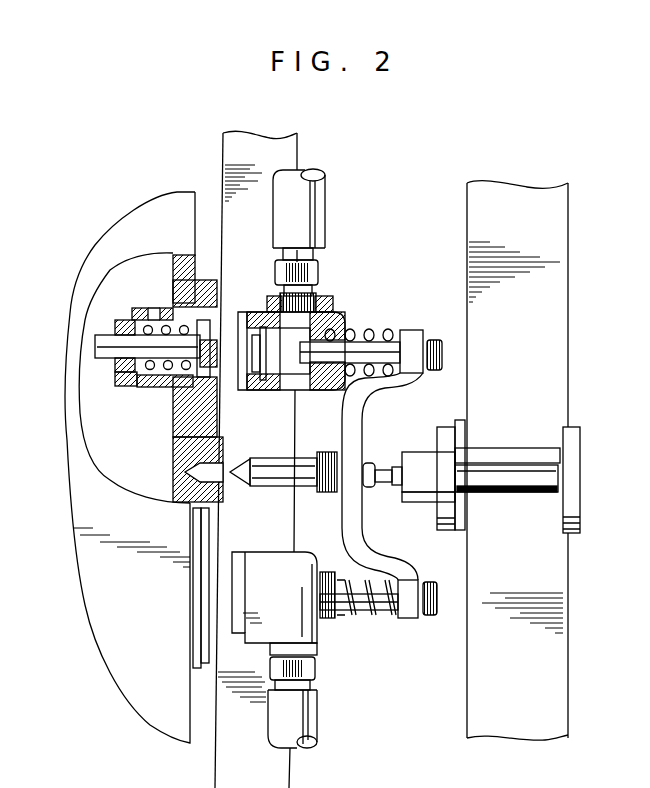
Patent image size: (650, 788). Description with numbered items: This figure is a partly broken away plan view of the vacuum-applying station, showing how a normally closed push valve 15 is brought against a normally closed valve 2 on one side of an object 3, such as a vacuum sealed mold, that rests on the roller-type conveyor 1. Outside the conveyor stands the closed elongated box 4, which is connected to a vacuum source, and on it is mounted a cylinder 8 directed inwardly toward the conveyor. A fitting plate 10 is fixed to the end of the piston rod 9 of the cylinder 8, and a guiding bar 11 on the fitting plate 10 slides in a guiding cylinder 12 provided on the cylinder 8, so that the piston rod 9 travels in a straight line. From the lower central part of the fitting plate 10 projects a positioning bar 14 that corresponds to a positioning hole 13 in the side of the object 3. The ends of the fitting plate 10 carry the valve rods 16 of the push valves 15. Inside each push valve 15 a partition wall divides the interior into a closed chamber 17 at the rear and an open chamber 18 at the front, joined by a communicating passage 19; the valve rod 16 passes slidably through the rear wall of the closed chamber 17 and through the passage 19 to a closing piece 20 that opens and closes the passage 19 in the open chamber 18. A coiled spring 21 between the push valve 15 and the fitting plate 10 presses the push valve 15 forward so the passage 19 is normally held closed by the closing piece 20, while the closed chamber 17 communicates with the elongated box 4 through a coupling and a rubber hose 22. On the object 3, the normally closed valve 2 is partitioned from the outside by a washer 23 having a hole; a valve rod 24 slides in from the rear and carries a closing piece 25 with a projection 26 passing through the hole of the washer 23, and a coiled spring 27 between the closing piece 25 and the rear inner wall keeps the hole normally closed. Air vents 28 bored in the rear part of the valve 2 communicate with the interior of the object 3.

The roller-type conveyor 1 is at (288, 143).
The normally closed valve 2 is at (142, 313).
The object 3 is at (160, 716).
The elongated box 4 is at (570, 290).
The cylinder 8 is at (576, 460).
The piston rod 9 is at (372, 470).
The fitting plate 10 is at (363, 550).
The guiding bar 11 is at (535, 467).
The guiding cylinder 12 is at (417, 493).
The positioning hole 13 is at (213, 477).
The positioning bar 14 is at (260, 482).
The normally closed push valve 15 is at (322, 305).
The valve rod 16 is at (363, 330).
The closed chamber 17 is at (303, 380).
The open chamber 18 is at (253, 373).
The communicating passage 19 is at (265, 312).
The closing piece 20 is at (265, 375).
The coiled spring 21 is at (388, 330).
The rubber hose 22 is at (312, 200).
The washer 23 is at (192, 403).
The valve rod 24 is at (97, 352).
The closing piece 25 is at (188, 377).
The projection 26 is at (220, 352).
The coiled spring 27 is at (143, 368).
The air vents 28 is at (166, 312).